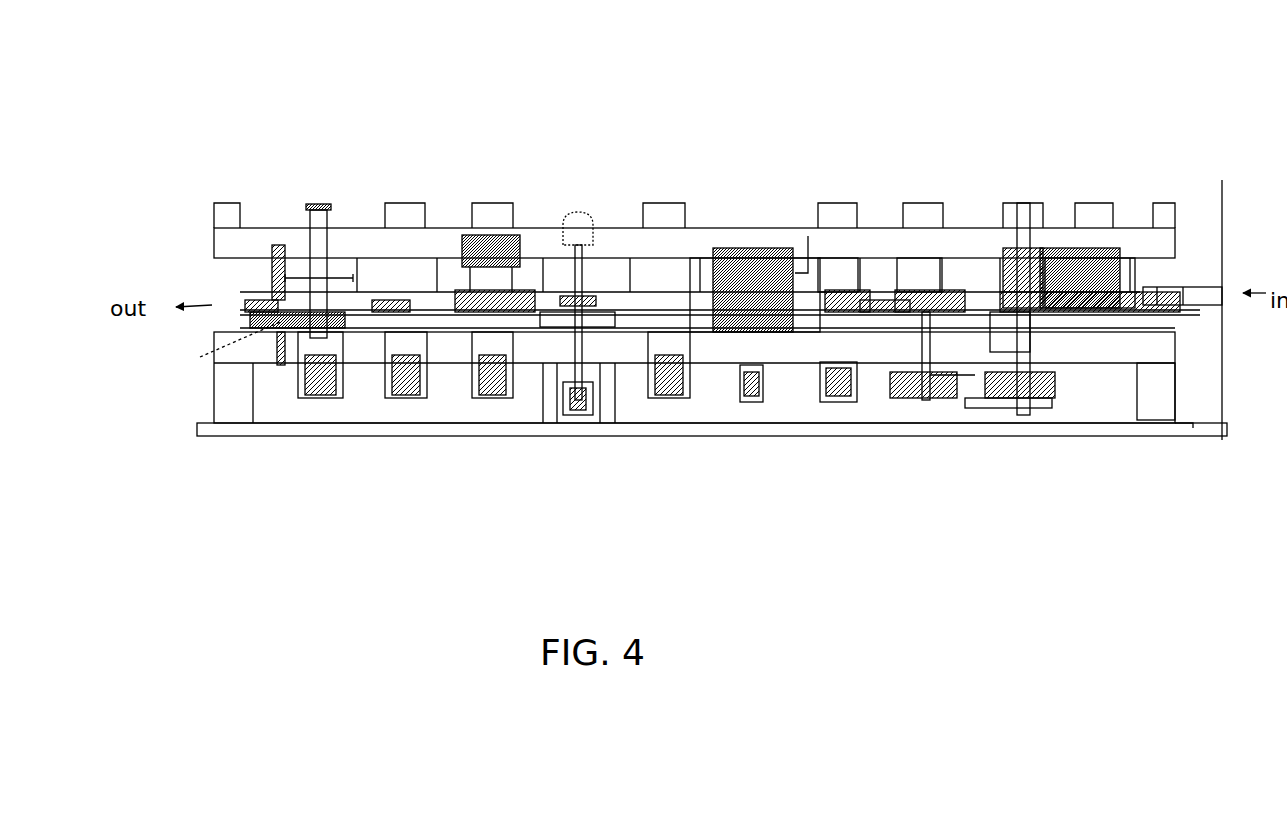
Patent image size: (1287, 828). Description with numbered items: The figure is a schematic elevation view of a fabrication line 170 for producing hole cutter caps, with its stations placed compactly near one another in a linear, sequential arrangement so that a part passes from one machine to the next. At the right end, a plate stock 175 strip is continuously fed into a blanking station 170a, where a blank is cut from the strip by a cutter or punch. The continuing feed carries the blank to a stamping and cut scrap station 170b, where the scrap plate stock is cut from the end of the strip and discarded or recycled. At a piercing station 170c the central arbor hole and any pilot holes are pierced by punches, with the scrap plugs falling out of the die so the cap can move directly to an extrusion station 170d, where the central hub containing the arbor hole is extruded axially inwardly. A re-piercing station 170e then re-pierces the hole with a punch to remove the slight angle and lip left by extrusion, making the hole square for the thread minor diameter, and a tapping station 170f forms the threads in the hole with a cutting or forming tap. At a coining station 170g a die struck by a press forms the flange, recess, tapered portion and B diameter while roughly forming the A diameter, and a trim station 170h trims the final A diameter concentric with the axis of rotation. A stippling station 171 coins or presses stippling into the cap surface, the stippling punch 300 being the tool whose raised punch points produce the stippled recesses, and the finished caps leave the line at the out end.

The fabrication line 170 is at (1130, 437).
The blanking station 170a is at (1095, 190).
The stamping and cut scrap station 170b is at (1021, 186).
The piercing station 170c is at (925, 188).
The extrusion station 170d is at (842, 183).
The re-piercing station 170e is at (757, 213).
The tapping station 170f is at (582, 193).
The coining station 170g is at (492, 183).
The trim station 170h is at (323, 188).
The stippling station 171 is at (662, 188).
The plate stock 175 is at (1199, 285).
The stippling punch 300 is at (637, 333).